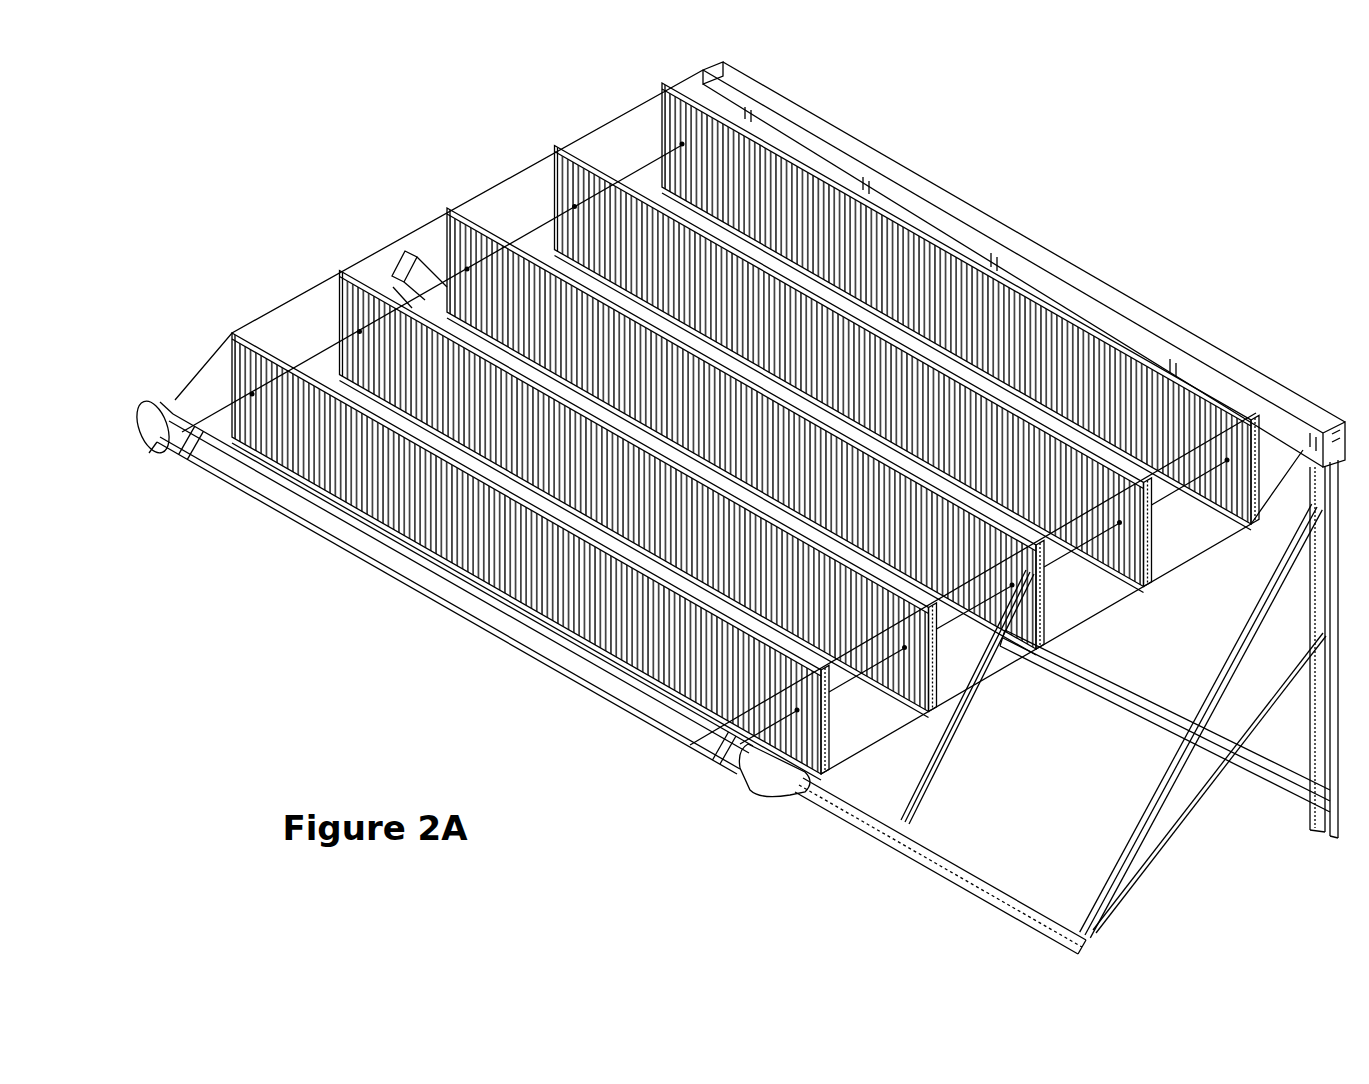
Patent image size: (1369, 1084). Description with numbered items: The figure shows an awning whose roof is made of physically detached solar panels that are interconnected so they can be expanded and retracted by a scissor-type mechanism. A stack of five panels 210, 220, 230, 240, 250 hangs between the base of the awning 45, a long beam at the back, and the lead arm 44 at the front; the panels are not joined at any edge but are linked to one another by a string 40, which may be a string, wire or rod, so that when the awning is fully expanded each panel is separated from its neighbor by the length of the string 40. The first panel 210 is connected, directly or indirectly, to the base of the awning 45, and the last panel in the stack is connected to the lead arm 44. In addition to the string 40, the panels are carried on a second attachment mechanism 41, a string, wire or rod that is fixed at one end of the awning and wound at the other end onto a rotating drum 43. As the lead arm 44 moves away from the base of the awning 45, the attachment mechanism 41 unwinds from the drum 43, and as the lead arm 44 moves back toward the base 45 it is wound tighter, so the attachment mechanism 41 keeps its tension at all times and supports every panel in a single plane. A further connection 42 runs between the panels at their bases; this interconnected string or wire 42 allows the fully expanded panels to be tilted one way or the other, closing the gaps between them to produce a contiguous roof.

The string 40 is at (496, 175).
The attachment mechanism 41 is at (847, 688).
The connection 42 is at (902, 729).
The rotating drum 43 is at (295, 518).
The lead arm 44 is at (143, 437).
The base of the awning 45 is at (918, 175).
The panel 210 is at (672, 112).
The panel 220 is at (565, 175).
The panel 230 is at (457, 237).
The panel 240 is at (350, 300).
The panel 250 is at (243, 362).